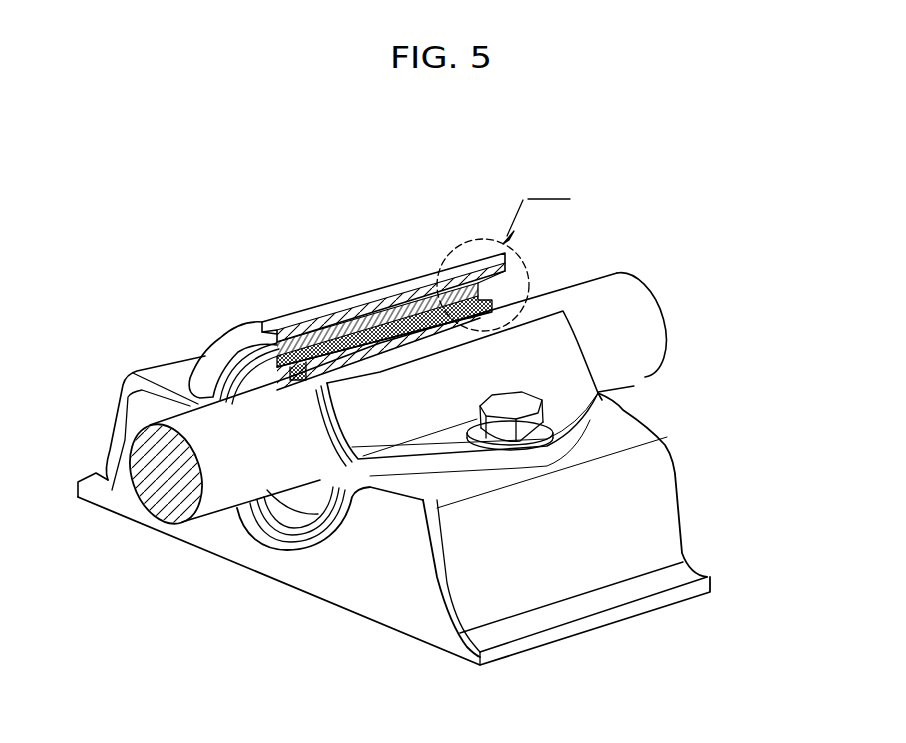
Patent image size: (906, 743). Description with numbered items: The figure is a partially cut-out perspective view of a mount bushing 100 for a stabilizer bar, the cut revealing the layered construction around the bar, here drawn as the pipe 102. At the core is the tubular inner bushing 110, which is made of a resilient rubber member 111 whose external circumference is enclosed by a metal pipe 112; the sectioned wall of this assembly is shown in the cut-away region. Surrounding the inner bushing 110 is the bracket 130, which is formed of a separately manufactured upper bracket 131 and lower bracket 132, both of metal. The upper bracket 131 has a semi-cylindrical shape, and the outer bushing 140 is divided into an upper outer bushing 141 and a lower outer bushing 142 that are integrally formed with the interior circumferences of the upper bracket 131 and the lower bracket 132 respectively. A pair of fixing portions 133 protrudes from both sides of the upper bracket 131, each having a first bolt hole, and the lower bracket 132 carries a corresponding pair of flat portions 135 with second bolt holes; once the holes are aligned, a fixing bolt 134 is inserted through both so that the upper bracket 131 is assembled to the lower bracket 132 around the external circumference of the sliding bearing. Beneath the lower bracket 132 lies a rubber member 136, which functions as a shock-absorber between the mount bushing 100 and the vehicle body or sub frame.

The mount bushing 100 is at (204, 264).
The pipe 102 is at (623, 302).
The inner bushing 110 is at (248, 193).
The rubber member 111 is at (328, 345).
The pipe 112 is at (268, 370).
The bracket 130 is at (722, 300).
The upper bracket 131 is at (584, 350).
The lower bracket 132 is at (676, 479).
The fixing portion 133 is at (435, 450).
The fixing bolt 134 is at (514, 402).
The flat portion 135 is at (457, 493).
The rubber member 136 is at (373, 582).
The outer bushing 140 is at (73, 617).
The upper outer bushing 141 is at (193, 400).
The lower outer bushing 142 is at (247, 527).